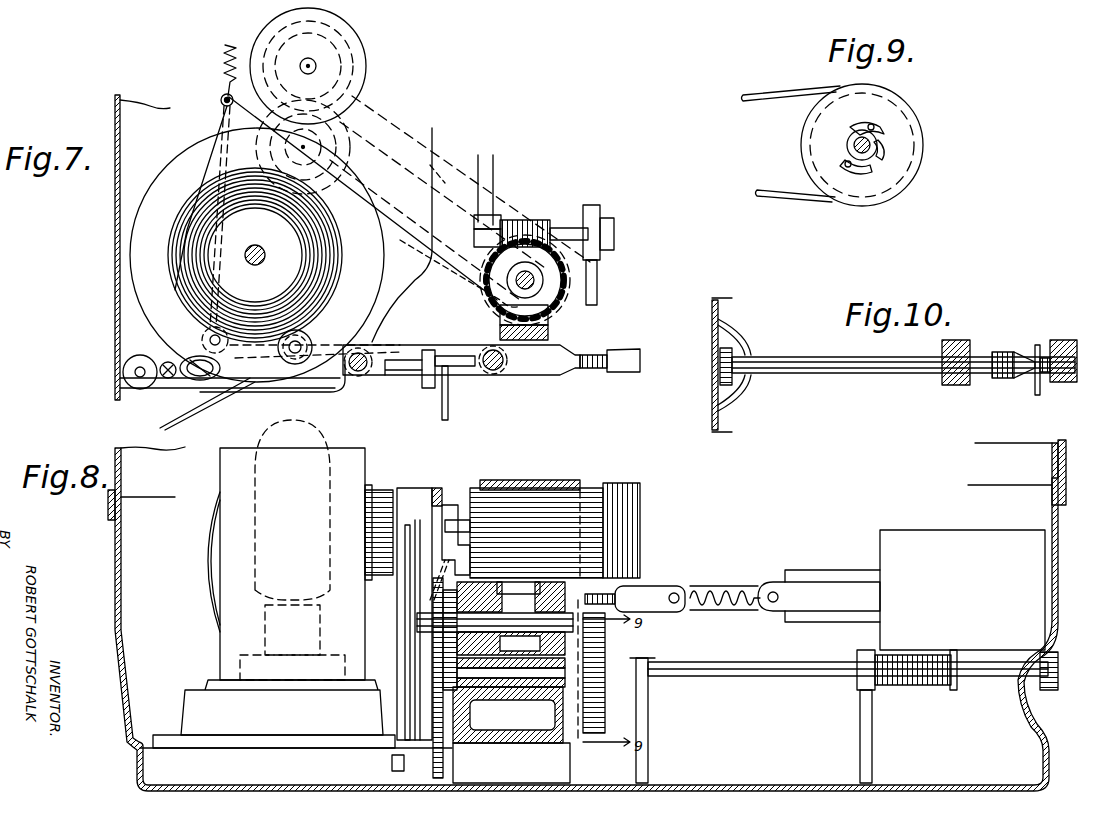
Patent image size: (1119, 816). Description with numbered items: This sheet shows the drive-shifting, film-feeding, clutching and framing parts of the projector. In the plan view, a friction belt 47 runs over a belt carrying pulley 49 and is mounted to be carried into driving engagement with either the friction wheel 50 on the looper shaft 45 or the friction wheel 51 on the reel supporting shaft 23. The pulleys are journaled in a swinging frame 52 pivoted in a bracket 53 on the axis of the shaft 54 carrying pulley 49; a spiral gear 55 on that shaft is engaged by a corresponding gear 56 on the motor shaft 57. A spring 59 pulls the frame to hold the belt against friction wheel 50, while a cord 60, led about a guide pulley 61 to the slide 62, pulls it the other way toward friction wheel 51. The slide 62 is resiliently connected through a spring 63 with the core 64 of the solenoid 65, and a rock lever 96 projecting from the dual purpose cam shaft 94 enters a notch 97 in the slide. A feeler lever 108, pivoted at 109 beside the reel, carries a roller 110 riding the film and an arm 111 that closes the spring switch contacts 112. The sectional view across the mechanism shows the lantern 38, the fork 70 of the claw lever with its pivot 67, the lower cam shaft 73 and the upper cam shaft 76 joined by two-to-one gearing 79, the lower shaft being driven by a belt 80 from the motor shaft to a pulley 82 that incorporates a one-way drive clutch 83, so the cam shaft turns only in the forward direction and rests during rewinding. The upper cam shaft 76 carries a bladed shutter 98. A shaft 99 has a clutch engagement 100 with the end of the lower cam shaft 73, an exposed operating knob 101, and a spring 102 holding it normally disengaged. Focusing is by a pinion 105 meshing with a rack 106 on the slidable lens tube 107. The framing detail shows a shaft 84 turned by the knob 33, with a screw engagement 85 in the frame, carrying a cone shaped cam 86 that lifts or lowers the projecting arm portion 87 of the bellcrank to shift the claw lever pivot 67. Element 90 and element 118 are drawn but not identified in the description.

In FIG. 7, the reel supporting shaft 23 is at (255, 255).
In FIG. 10, the knob 33 is at (718, 378).
In FIG. 8, the lantern 38 is at (226, 464).
In FIG. 7, the looper shaft 45 is at (316, 66).
In FIG. 7, the friction belt 47 is at (445, 178).
In FIG. 7, the belt carrying pulley 49 is at (482, 277).
In FIG. 7, the friction wheel 50 is at (358, 88).
In FIG. 7, the friction wheel 51 is at (300, 279).
In FIG. 7, the frame 52 is at (450, 228).
In FIG. 7, the bracket 53 is at (550, 333).
In FIG. 7, the shaft 54 is at (537, 285).
In FIG. 7, the spiral gear 55 is at (497, 288).
In FIG. 7, the gear 56 is at (530, 222).
In FIG. 7, the motor shaft 57 is at (560, 228).
In FIG. 7, the spring 59 is at (224, 64).
In FIG. 7, the cord 60 is at (226, 117).
In FIG. 7, the guide pulley 61 is at (200, 333).
In FIG. 7, the slide 62 is at (350, 378).
In FIG. 8, the slide 62 is at (580, 599).
In FIG. 8, the spring 63 is at (742, 590).
In FIG. 8, the core 64 is at (833, 580).
In FIG. 8, the solenoid 65 is at (955, 545).
In FIG. 8, the lever pivot 67 is at (403, 761).
In FIG. 8, the fork 70 is at (425, 520).
In FIG. 9, the lower cam shaft 73 is at (854, 143).
In FIG. 8, the lower cam shaft 73 is at (520, 690).
In FIG. 8, the upper cam shaft 76 is at (535, 632).
In FIG. 8, the two-to-one gearing 79 is at (470, 647).
In FIG. 9, the belt 80 is at (770, 96).
In FIG. 8, the belt 80 is at (605, 655).
In FIG. 9, the pulley 82 is at (920, 166).
In FIG. 8, the pulley 82 is at (605, 642).
In FIG. 9, the one-way drive clutch 83 is at (882, 139).
In FIG. 10, the shaft 84 is at (842, 374).
In FIG. 10, the screw engagement 85 is at (1047, 352).
In FIG. 10, the cone shaped cam 86 is at (1026, 355).
In FIG. 10, the projecting arm portion 87 is at (1036, 387).
In FIG. 8, the bracket 90 is at (452, 520).
In FIG. 7, the dual purpose cam shaft 94 is at (428, 350).
In FIG. 7, the rock lever 96 is at (400, 372).
In FIG. 7, the notch 97 is at (424, 382).
In FIG. 8, the bladed shutter 98 is at (425, 644).
In FIG. 8, the shaft 99 is at (806, 678).
In FIG. 8, the clutch engagement 100 is at (640, 672).
In FIG. 8, the operating knob 101 is at (1058, 660).
In FIG. 8, the spring 102 is at (916, 686).
In FIG. 8, the pinion 105 is at (528, 590).
In FIG. 8, the rack 106 is at (498, 580).
In FIG. 8, the lens tube 107 is at (538, 484).
In FIG. 7, the lever 108 is at (185, 382).
In FIG. 7, the pivot 109 is at (123, 374).
In FIG. 7, the roller 110 is at (310, 343).
In FIG. 7, the arm 111 is at (237, 392).
In FIG. 7, the spring switch contacts 112 is at (300, 340).
In FIG. 7, the handle 118 is at (207, 404).